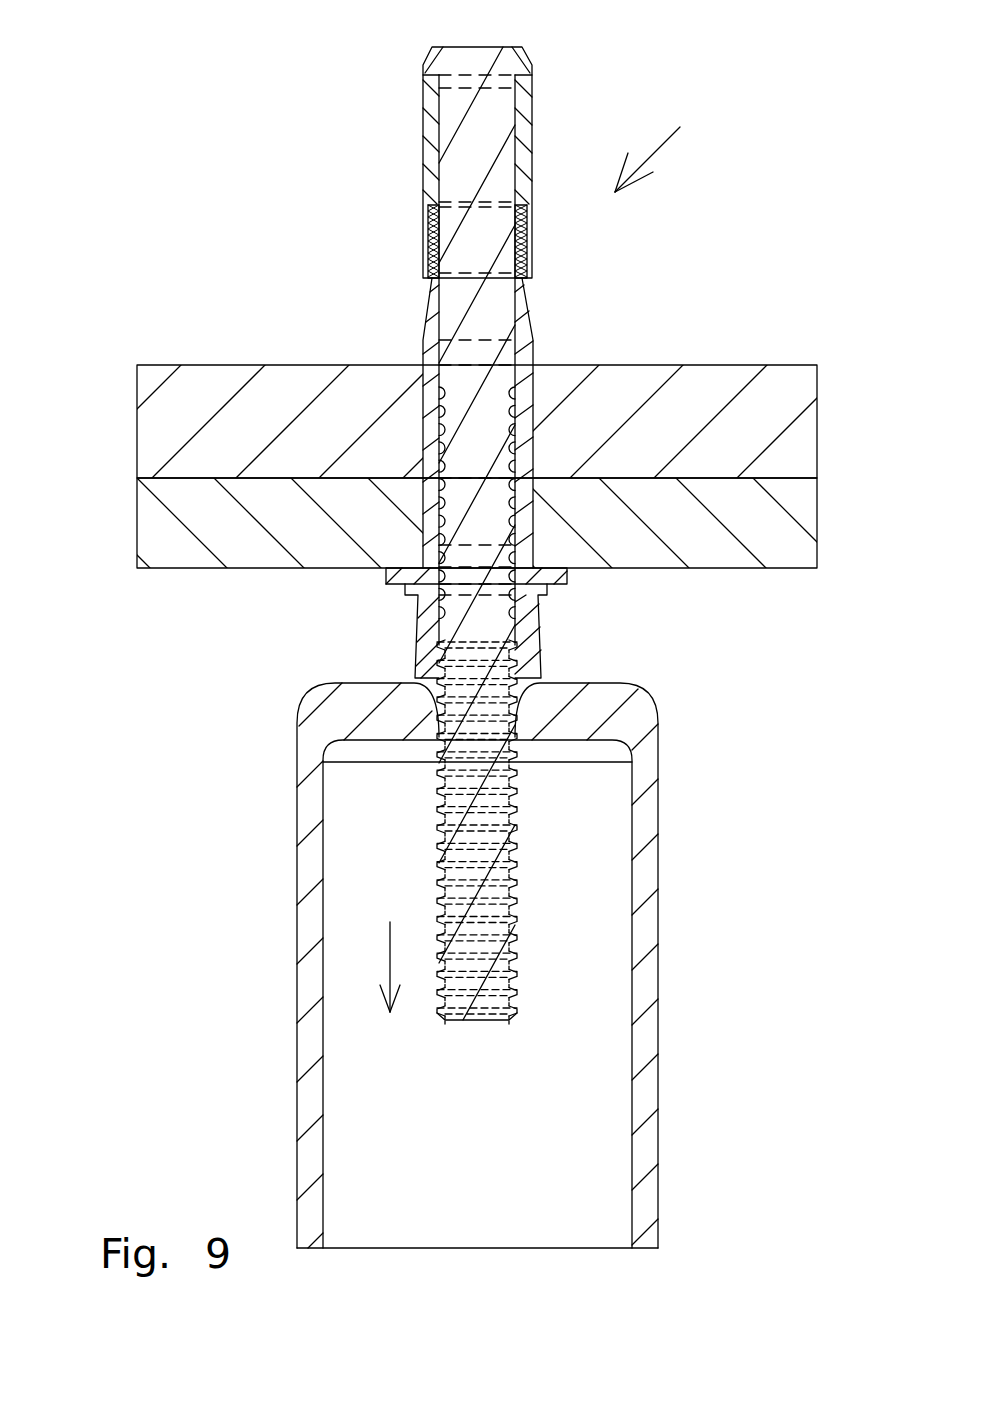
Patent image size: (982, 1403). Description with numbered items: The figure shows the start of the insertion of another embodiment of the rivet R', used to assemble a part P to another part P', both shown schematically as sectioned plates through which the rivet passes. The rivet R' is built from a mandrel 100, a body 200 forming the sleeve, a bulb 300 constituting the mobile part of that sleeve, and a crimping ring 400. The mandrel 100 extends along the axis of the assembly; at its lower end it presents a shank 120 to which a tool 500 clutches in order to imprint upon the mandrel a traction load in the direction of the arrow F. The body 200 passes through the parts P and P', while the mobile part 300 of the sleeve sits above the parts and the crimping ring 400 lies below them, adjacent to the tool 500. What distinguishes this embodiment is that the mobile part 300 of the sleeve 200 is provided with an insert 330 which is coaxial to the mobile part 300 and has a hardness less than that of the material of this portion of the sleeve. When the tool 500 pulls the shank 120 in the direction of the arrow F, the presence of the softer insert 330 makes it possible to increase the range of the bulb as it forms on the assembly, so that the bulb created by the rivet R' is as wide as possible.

The mandrel 100 is at (492, 333).
The shank 120 is at (498, 877).
The body 200 is at (438, 355).
The bulb 300 is at (427, 135).
The insert 330 is at (427, 238).
The crimping ring 400 is at (428, 627).
The tool 500 is at (642, 953).
The part P is at (451, 556).
The other part P' is at (459, 386).
The rivet R' is at (676, 139).
The traction load arrow F is at (373, 964).